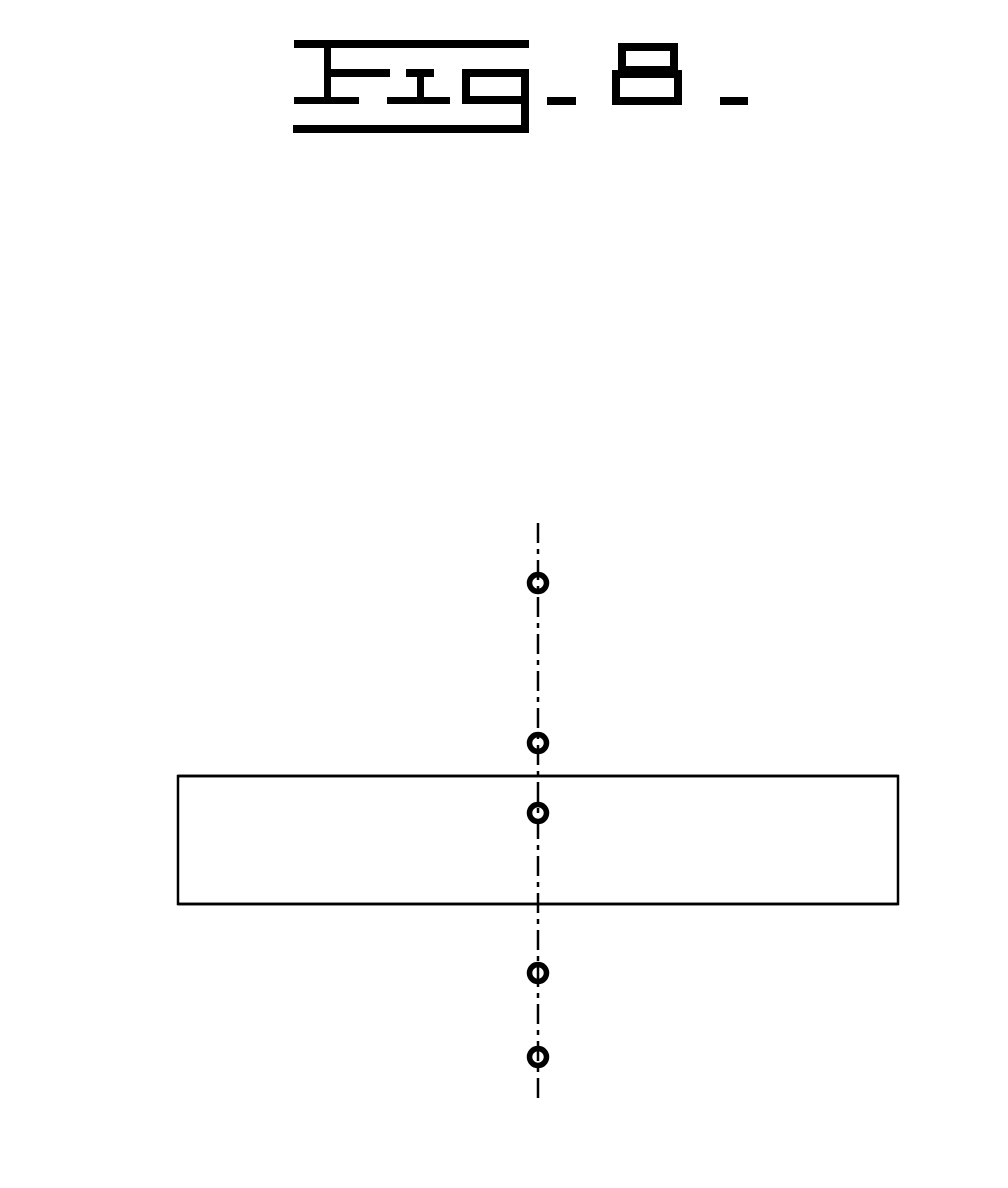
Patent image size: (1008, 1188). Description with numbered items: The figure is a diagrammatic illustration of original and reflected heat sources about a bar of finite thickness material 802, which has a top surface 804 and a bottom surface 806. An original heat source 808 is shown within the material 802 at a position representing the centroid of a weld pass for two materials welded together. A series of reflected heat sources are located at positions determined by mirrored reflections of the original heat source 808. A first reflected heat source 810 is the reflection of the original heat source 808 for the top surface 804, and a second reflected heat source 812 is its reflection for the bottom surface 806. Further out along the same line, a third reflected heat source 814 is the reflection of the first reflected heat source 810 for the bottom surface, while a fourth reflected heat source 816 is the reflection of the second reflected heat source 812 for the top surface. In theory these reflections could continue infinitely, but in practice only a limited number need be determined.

The finite thickness material 802 is at (178, 858).
The top surface 804 is at (293, 775).
The bottom surface 806 is at (363, 904).
The original heat source 808 is at (527, 813).
The first reflected heat source 810 is at (527, 743).
The second reflected heat source 812 is at (549, 973).
The third reflected heat source 814 is at (549, 1057).
The fourth reflected heat source 816 is at (549, 583).